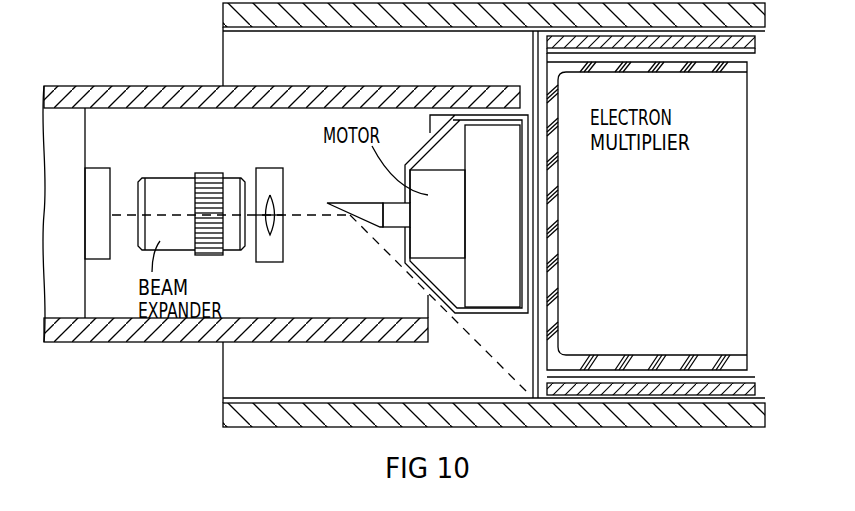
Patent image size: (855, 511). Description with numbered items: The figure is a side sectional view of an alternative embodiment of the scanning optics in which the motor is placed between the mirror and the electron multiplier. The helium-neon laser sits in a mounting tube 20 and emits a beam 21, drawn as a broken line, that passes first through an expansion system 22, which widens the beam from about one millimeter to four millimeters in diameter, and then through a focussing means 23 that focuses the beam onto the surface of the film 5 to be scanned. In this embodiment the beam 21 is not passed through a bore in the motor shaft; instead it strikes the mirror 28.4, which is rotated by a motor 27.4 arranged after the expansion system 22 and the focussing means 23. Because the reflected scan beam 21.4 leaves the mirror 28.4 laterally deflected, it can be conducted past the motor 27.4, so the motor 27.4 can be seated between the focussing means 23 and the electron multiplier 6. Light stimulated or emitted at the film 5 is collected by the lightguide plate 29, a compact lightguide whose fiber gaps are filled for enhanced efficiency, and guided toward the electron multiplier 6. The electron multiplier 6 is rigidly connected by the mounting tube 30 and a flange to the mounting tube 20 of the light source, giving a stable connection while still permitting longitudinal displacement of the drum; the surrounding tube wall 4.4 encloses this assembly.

The vacuum tube wall 4.4 is at (268, 420).
The film 5 is at (345, 398).
The mounting tube 20 is at (107, 325).
The beam 21 is at (315, 215).
The expansion system 22 is at (173, 185).
The focussing means 23 is at (267, 183).
The mirror 28.4 is at (343, 204).
The scan beam 21.4 is at (495, 357).
The motor 27.4 is at (428, 245).
The lightguide plate 29 is at (533, 333).
The mounting tube 30 is at (552, 223).
The electron multiplier 6 is at (607, 362).